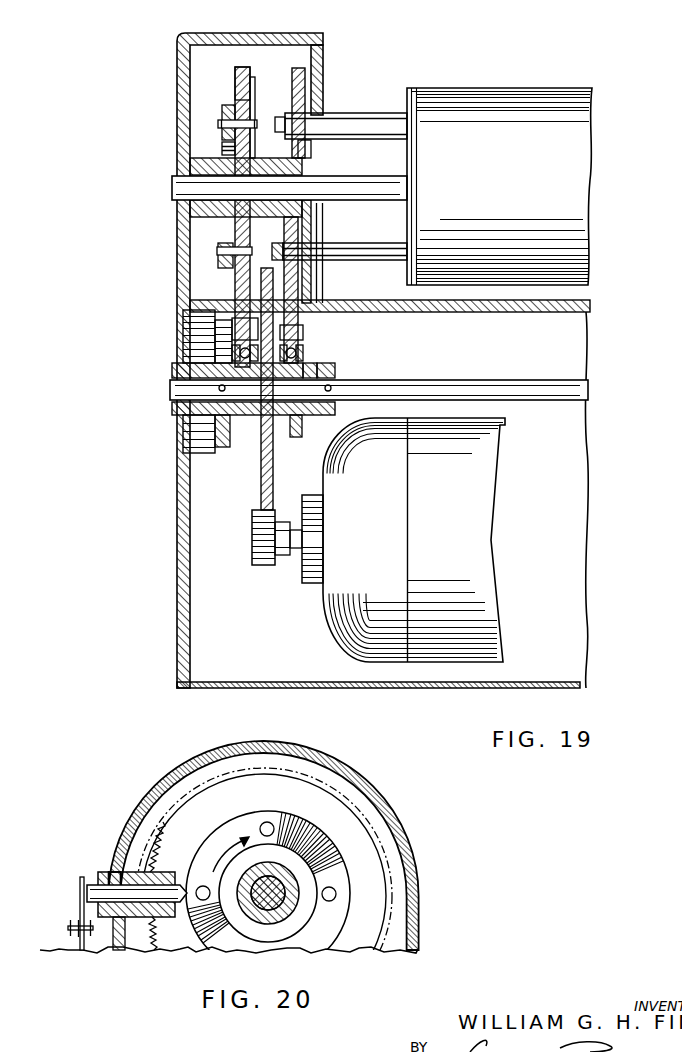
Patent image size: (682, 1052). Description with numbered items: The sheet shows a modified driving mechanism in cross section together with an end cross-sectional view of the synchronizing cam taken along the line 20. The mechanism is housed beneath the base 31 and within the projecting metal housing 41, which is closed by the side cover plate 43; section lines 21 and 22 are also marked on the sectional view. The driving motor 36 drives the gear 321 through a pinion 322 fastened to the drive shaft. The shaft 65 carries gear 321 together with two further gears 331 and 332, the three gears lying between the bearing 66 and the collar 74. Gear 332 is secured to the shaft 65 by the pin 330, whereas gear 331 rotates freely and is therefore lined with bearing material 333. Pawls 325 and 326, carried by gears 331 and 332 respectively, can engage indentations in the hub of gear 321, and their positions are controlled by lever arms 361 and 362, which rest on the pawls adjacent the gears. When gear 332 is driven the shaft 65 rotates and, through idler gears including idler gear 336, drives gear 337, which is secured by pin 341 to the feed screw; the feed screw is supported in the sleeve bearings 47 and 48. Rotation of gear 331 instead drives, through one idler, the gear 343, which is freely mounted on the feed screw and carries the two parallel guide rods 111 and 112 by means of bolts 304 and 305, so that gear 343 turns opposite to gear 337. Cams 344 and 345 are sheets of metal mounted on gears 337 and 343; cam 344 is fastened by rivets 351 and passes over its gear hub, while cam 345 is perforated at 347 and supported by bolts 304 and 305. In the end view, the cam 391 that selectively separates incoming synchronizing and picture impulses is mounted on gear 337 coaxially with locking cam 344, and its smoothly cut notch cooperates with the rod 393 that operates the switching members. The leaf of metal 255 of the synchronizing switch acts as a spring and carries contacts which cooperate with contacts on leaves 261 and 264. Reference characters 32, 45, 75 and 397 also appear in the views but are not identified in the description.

In FIG. 19, the housing 41 is at (176, 65).
In FIG. 19, the side cover plate 43 is at (323, 57).
In FIG. 19, the base 31 is at (586, 309).
In FIG. 19, the sleeve bearing 47 is at (189, 212).
In FIG. 20, the sleeve bearing 47 is at (285, 880).
In FIG. 19, the section line 22- 22 is at (238, 53).
In FIG. 19, the section line 21- 21 is at (284, 60).
In FIG. 19, the section line 20 is at (212, 100).
In FIG. 19, the locking cam 344 is at (249, 80).
In FIG. 19, the cam 345 is at (257, 86).
In FIG. 19, the gear 343 is at (306, 78).
In FIG. 19, the gear 337 is at (235, 88).
In FIG. 20, the gear 337 is at (156, 943).
In FIG. 19, the synchronizing cam 391 is at (235, 97).
In FIG. 20, the synchronizing cam 391 is at (308, 836).
In FIG. 19, the rivets 351 is at (222, 122).
In FIG. 20, the rivets 351 is at (270, 823).
In FIG. 19, the bolt 304 is at (280, 116).
In FIG. 19, the guide rod 111 is at (364, 110).
In FIG. 19, the perforation 347 is at (311, 150).
In FIG. 19, the pin 341 is at (260, 185).
In FIG. 19, the sleeve bearing 48 is at (352, 192).
In FIG. 19, the bolt 305 is at (276, 243).
In FIG. 19, the guide rod 112 is at (352, 262).
In FIG. 19, the drum 32 is at (590, 92).
In FIG. 19, the idler gear 336 is at (183, 321).
In FIG. 19, the pawl 326 is at (215, 331).
In FIG. 19, the lever arm 362 is at (258, 326).
In FIG. 19, the bearing material 333 is at (232, 352).
In FIG. 19, the lever arm 361 is at (290, 340).
In FIG. 19, the gear 331 is at (303, 352).
In FIG. 19, the bearing 66 is at (200, 368).
In FIG. 19, the pawl 325 is at (312, 366).
In FIG. 19, the collar 74 is at (335, 370).
In FIG. 19, the shaft 65 is at (486, 381).
In FIG. 20, the shaft 65 is at (280, 900).
In FIG. 19, the support plate 75 is at (336, 412).
In FIG. 19, the pin 330 is at (221, 400).
In FIG. 19, the gear 332 is at (228, 416).
In FIG. 19, the drive gear 321 is at (274, 482).
In FIG. 19, the pinion 322 is at (252, 564).
In FIG. 19, the driving motor 36 is at (428, 536).
In FIG. 20, the housing 45 is at (374, 788).
In FIG. 20, the hole 397 is at (203, 884).
In FIG. 20, the rod 393 is at (153, 871).
In FIG. 20, the leaf of metal 255 is at (80, 877).
In FIG. 20, the leaf 261 is at (96, 946).
In FIG. 20, the leaf 264 is at (70, 933).